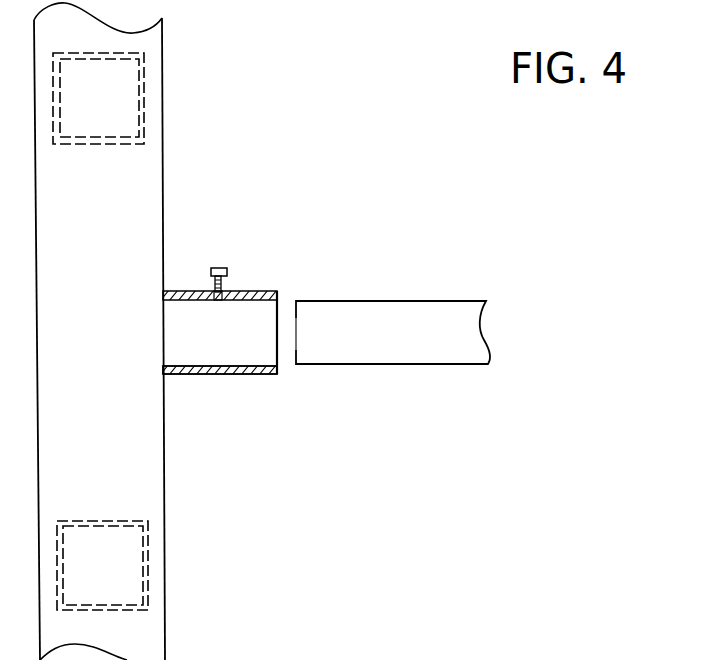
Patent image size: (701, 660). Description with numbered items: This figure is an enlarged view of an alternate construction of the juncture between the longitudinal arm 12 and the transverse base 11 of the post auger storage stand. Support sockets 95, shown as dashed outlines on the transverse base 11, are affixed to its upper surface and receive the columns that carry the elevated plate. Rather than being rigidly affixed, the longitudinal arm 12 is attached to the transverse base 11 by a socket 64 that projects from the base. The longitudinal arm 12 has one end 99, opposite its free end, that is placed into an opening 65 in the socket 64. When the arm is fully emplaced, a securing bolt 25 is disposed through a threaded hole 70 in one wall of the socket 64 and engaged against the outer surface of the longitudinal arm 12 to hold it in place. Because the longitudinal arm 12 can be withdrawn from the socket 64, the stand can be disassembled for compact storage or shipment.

The transverse base 11 is at (117, 397).
The support sockets 95 is at (143, 97).
The opening 65 is at (280, 299).
The socket 64 is at (253, 373).
The threaded hole 70 is at (222, 295).
The securing bolt 25 is at (216, 267).
The longitudinal arm 12 is at (412, 312).
The end 99 is at (296, 328).